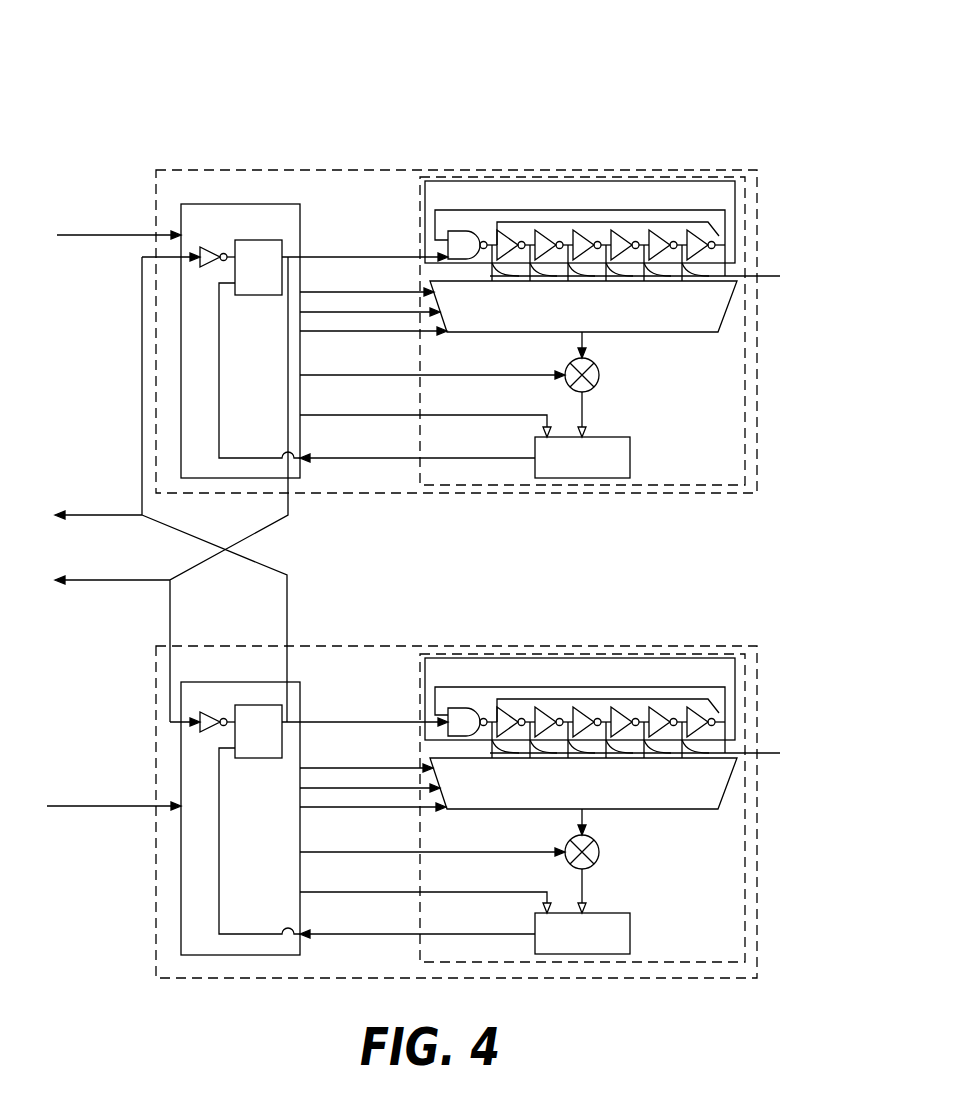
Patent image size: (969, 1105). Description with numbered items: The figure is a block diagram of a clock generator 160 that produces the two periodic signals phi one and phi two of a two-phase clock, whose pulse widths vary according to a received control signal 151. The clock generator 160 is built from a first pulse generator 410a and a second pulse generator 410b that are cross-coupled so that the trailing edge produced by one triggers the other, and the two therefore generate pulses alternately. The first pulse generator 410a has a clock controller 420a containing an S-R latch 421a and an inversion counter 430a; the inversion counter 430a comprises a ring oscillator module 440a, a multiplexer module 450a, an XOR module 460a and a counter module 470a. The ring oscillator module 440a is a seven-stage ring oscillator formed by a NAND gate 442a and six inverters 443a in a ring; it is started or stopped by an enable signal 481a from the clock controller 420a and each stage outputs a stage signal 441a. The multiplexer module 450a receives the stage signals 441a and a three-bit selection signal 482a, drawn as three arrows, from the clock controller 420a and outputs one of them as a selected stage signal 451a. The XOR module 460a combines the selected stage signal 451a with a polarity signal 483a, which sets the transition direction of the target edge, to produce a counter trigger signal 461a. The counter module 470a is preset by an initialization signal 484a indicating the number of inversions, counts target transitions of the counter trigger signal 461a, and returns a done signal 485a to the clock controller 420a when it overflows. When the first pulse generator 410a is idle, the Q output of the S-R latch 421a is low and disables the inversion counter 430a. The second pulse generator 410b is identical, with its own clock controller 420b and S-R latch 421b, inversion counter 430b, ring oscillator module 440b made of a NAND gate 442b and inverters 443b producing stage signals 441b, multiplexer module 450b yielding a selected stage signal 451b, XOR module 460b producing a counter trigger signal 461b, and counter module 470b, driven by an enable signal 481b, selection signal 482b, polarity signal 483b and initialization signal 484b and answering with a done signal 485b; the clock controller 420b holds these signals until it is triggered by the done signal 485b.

The clock generator 160 is at (588, 80).
The control signal 151 is at (114, 495).
The first pulse generator 410a is at (580, 170).
The second pulse generator 410b is at (580, 646).
The clock controller 420a is at (228, 233).
The clock controller 420b is at (228, 703).
The S-R latch 421a is at (254, 295).
The S-R latch 421b is at (254, 758).
The inversion counter 430a is at (686, 177).
The inversion counter 430b is at (686, 654).
The ring oscillator module 440a is at (470, 205).
The ring oscillator module 440b is at (470, 682).
The stage signals 441a is at (655, 275).
The stage signals 441b is at (655, 752).
The NAND gate 442a is at (452, 231).
The NAND gate 442b is at (452, 708).
The inverters 443a is at (618, 206).
The inverters 443b is at (618, 683).
The multiplexer module 450a is at (693, 320).
The multiplexer module 450b is at (693, 797).
The selected stage signal 451a is at (584, 350).
The selected stage signal 451b is at (584, 827).
The XOR module 460a is at (600, 381).
The XOR module 460b is at (600, 858).
The counter trigger signal 461a is at (584, 415).
The counter trigger signal 461b is at (584, 892).
The counter module 470a is at (622, 437).
The counter module 470b is at (622, 913).
The enable signal 481a is at (308, 254).
The enable signal 481b is at (308, 719).
The selection signal 482a is at (385, 293).
The selection signal 482b is at (385, 769).
The polarity signal 483a is at (362, 376).
The polarity signal 483b is at (362, 853).
The initialization signal 484a is at (362, 416).
The initialization signal 484b is at (362, 893).
The done signal 485a is at (372, 459).
The done signal 485b is at (372, 935).